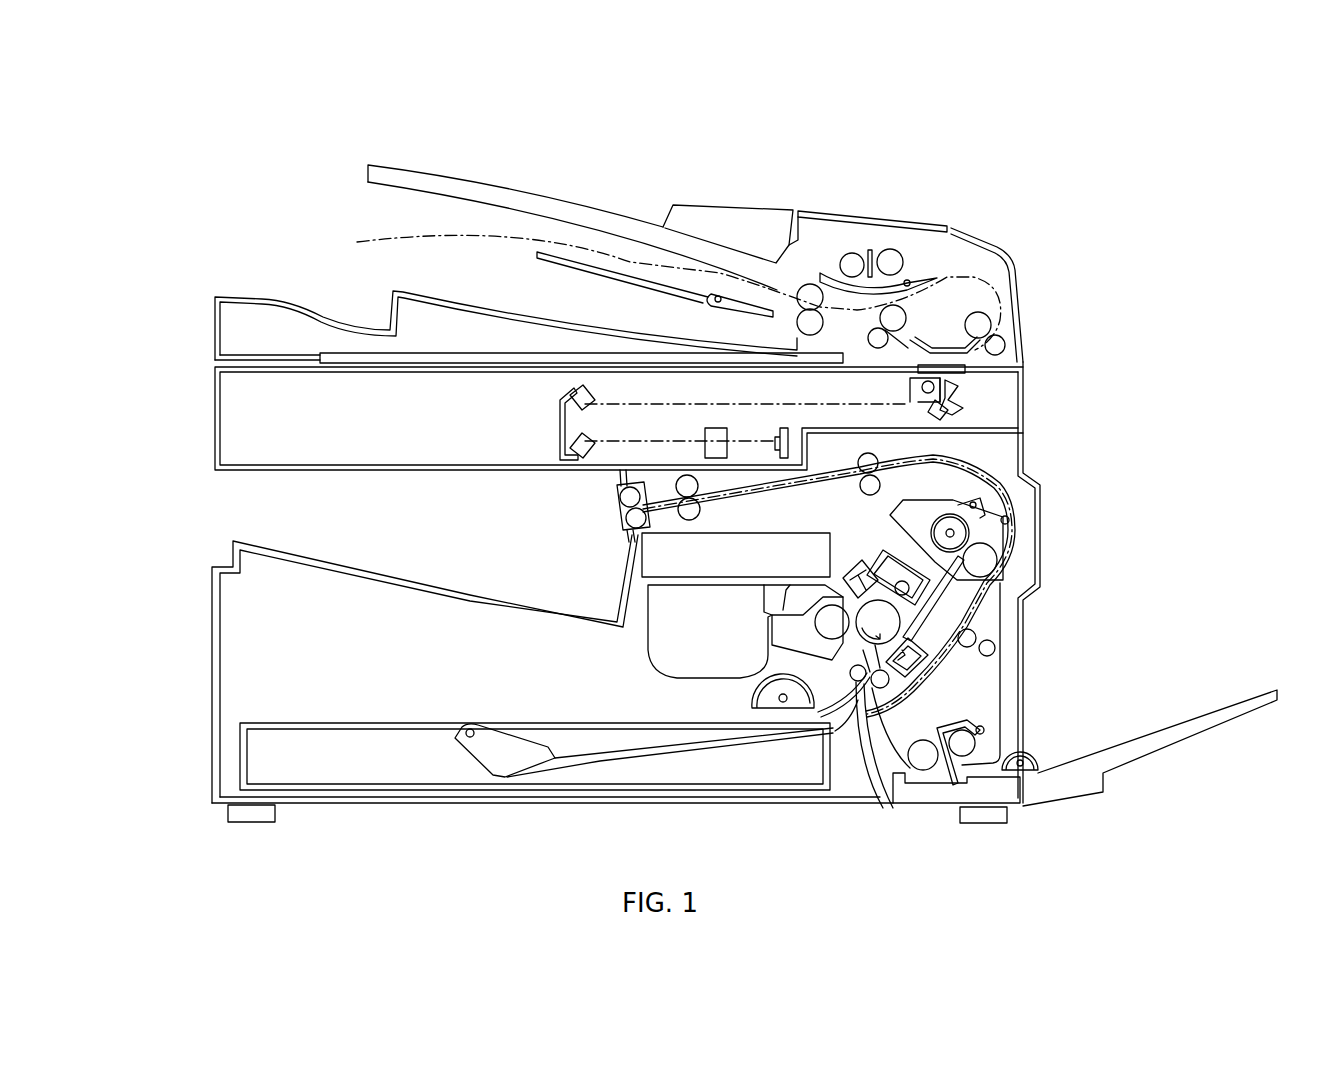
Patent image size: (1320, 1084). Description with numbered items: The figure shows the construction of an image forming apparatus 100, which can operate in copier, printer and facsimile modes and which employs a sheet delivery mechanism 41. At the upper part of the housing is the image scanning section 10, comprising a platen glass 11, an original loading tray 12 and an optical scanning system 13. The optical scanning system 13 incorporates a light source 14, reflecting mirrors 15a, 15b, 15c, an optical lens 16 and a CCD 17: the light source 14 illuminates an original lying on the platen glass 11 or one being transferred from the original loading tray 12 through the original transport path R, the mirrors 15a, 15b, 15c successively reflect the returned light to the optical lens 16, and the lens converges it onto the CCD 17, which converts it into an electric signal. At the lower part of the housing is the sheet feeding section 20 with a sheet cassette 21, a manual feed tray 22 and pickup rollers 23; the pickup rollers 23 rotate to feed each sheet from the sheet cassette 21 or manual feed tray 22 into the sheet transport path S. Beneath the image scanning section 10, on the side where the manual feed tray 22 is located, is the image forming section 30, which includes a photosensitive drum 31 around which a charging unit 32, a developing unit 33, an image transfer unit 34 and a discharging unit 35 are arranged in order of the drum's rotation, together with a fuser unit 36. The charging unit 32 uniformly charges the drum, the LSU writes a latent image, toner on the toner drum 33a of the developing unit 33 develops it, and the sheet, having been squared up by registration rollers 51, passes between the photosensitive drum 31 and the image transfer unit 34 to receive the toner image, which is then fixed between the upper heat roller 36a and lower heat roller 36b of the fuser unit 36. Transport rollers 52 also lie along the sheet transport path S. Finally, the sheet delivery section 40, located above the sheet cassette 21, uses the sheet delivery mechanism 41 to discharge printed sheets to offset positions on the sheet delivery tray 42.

The image forming apparatus 100 is at (1070, 166).
The image scanning section 10 is at (1097, 228).
The platen glass 11 is at (348, 370).
The original loading tray 12 is at (556, 247).
The optical scanning system 13 is at (1034, 455).
The light source 14 is at (910, 390).
The reflecting mirror 15a is at (960, 410).
The reflecting mirror 15b is at (588, 396).
The reflecting mirror 15c is at (588, 436).
The optical lens 16 is at (724, 432).
The charge-coupled device (CCD) 17 is at (788, 432).
The original transport path R is at (977, 258).
The sheet feeding section 20 is at (203, 727).
The sheet cassette 21 is at (350, 730).
The manual feed tray 22 is at (1172, 713).
The pickup rollers 23 is at (758, 712).
The image forming section 30 is at (1112, 496).
The photosensitive drum 31 is at (897, 622).
The charging unit 32 is at (858, 572).
The developing unit 33 is at (787, 643).
The toner drum 33a is at (832, 634).
The image transfer unit 34 is at (915, 660).
The discharging unit 35 is at (893, 542).
The fuser unit 36 is at (1080, 519).
The upper heat roller 36a is at (963, 533).
The lower heat roller 36b is at (990, 560).
The sheet delivery section 40 is at (443, 527).
The sheet delivery mechanism 41 is at (616, 494).
The sheet delivery tray 42 is at (475, 595).
The registration rollers 51 is at (885, 681).
The transport rollers 52 is at (700, 503).
The sheet transport path S is at (780, 490).